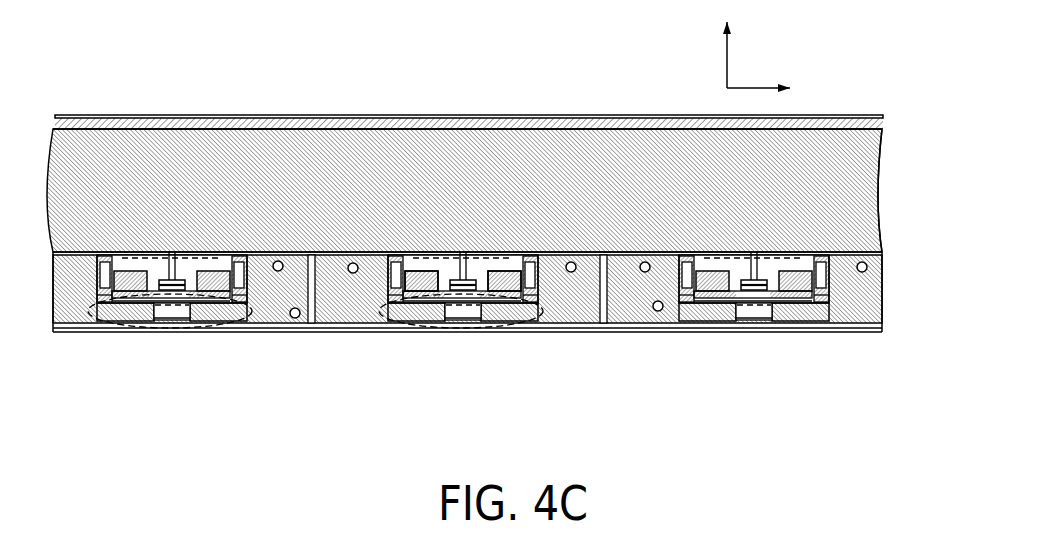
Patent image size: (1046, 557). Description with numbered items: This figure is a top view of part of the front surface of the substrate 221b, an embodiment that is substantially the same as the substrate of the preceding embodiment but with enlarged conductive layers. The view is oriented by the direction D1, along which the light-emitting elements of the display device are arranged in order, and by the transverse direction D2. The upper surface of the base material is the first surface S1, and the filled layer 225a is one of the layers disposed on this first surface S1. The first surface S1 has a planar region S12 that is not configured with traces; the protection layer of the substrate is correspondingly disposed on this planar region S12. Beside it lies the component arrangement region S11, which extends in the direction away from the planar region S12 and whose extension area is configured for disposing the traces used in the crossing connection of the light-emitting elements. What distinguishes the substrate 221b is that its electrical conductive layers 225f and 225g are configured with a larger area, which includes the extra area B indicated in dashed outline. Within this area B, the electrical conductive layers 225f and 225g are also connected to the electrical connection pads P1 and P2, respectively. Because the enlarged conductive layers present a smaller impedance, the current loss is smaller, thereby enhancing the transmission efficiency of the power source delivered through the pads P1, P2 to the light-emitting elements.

The substrate 221b is at (148, 114).
The first surface S1 is at (337, 120).
The filled layer 225a is at (483, 162).
The planar region S12 is at (868, 178).
The component arrangement region S11 is at (876, 283).
The electrical conductive layer 225f is at (325, 312).
The electrical conductive layer 225g is at (577, 313).
The electrical connection pad P1 is at (419, 283).
The electrical connection pad P2 is at (498, 283).
The area B is at (240, 333).
The direction D1 is at (777, 90).
The direction D2 is at (730, 44).